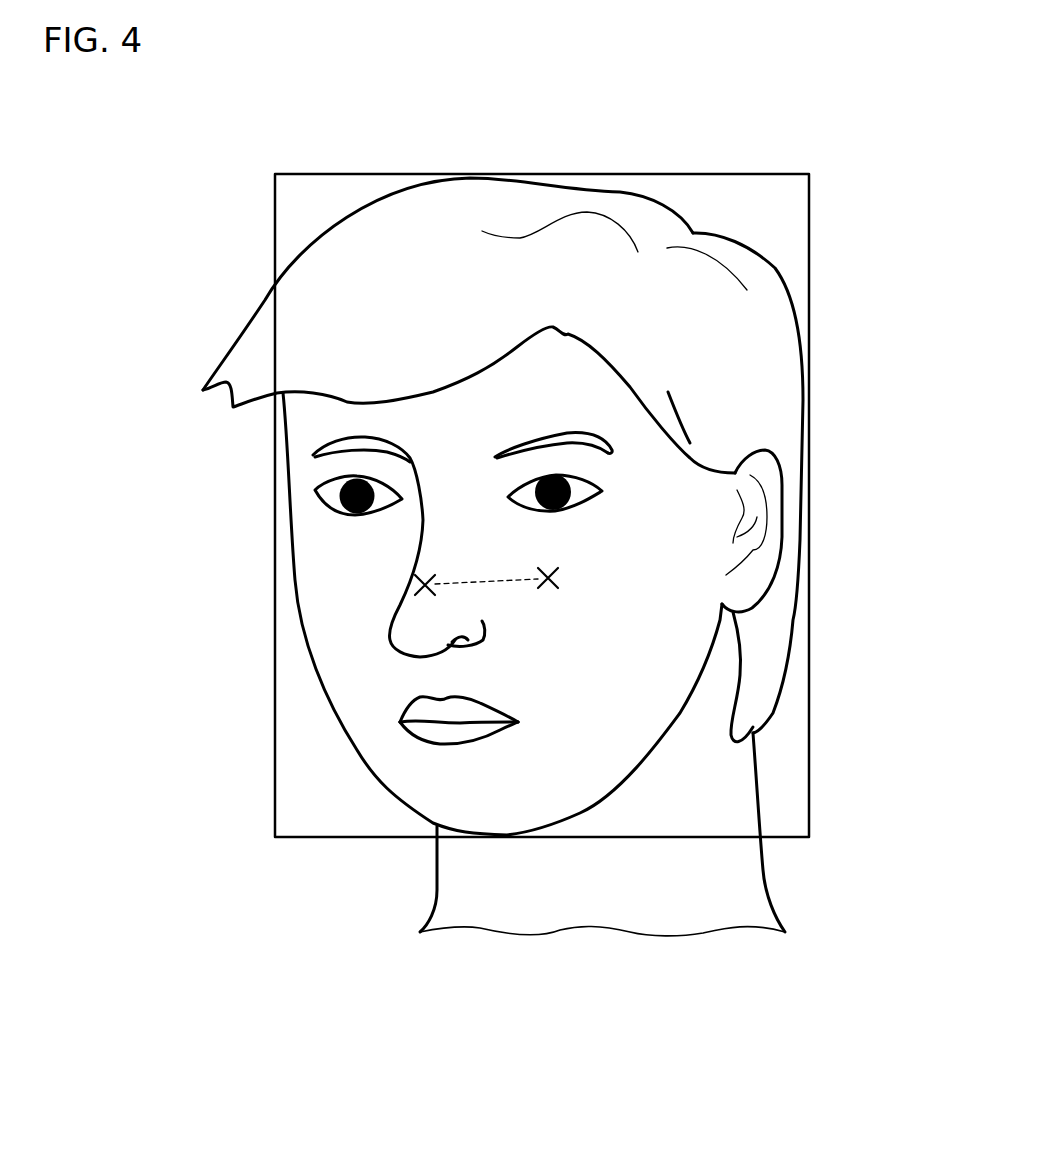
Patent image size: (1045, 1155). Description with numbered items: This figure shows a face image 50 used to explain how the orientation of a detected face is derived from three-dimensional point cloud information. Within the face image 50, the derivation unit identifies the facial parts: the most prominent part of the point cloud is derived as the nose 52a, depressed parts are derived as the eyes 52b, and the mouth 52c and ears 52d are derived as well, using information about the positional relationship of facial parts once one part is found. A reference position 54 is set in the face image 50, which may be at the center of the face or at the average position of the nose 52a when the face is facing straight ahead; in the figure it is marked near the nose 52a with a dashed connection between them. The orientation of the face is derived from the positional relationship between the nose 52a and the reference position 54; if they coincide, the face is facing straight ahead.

The face image 50 is at (776, 173).
The nose 52a is at (415, 584).
The eyes 52b is at (355, 497).
The mouth 52c is at (440, 725).
The ears 52d is at (773, 526).
The reference position 54 is at (558, 576).